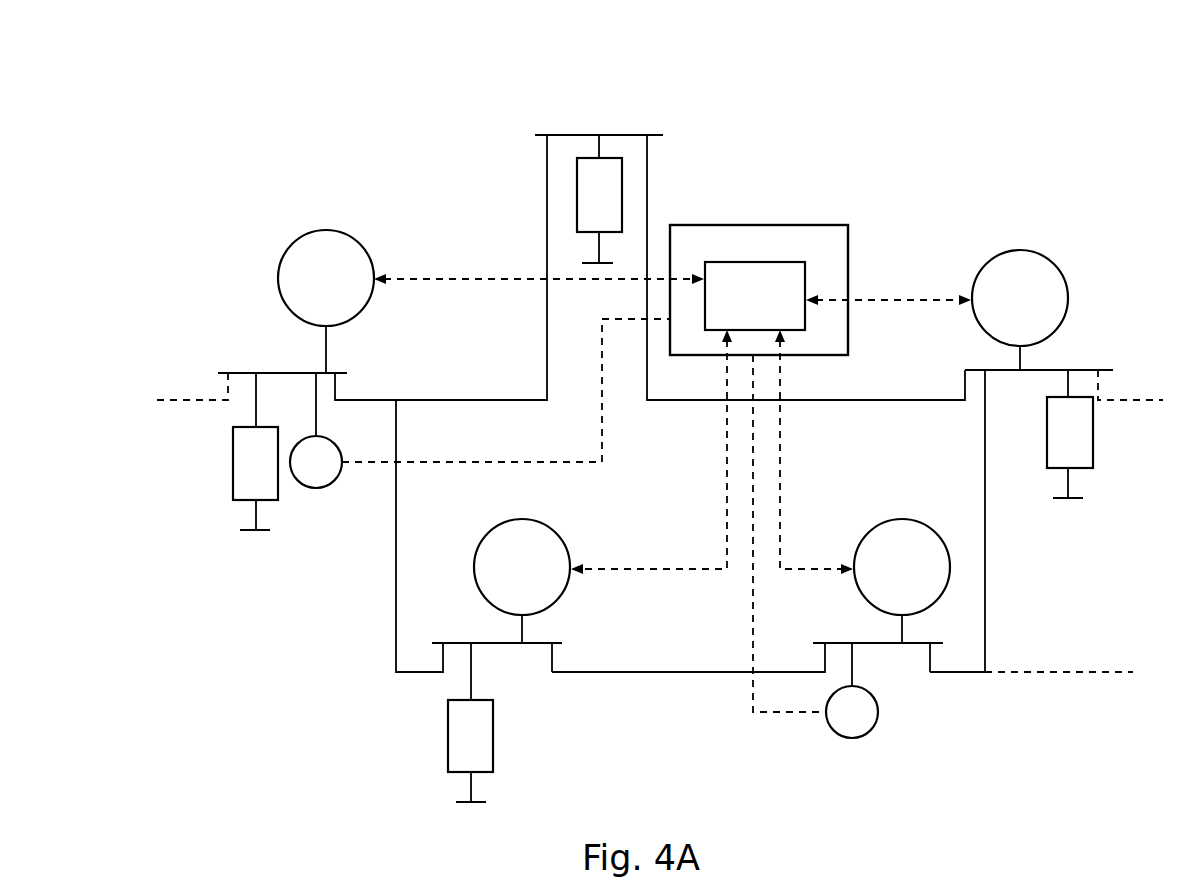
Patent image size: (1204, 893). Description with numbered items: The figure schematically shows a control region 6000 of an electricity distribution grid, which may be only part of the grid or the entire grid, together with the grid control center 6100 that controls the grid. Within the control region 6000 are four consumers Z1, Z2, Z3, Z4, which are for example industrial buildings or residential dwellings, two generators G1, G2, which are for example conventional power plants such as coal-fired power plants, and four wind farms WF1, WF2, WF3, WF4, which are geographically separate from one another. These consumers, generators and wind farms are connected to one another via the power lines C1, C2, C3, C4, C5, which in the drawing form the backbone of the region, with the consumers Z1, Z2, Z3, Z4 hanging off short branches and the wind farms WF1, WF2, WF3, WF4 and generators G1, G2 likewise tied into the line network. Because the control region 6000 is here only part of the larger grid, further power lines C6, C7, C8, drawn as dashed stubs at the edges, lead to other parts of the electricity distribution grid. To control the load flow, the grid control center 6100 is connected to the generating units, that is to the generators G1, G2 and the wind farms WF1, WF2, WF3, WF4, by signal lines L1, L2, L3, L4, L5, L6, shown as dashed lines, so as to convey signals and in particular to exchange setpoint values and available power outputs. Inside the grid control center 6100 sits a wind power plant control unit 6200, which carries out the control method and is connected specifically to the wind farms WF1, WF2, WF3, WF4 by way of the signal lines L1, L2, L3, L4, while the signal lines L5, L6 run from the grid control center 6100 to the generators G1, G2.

The control region 6000 is at (1038, 151).
The grid control center 6100 is at (815, 225).
The wind power plant control unit 6200 is at (786, 310).
The wind farm WF1 is at (326, 301).
The wind farm WF2 is at (522, 581).
The wind farm WF3 is at (902, 581).
The wind farm WF4 is at (1020, 310).
The consumer Z1 is at (255, 451).
The consumer Z2 is at (470, 722).
The consumer Z3 is at (599, 199).
The consumer Z4 is at (1070, 434).
The generator G1 is at (316, 430).
The generator G2 is at (852, 690).
The power line C1 is at (508, 398).
The power line C2 is at (647, 180).
The power line C3 is at (985, 552).
The power line C4 is at (652, 672).
The power line C5 is at (397, 492).
The power line C6 is at (1145, 400).
The power line C7 is at (1093, 673).
The power line C8 is at (175, 403).
The signal line L1 is at (522, 277).
The signal line L2 is at (708, 568).
The signal line L3 is at (780, 469).
The signal line L4 is at (907, 297).
The signal line L5 is at (578, 462).
The signal line L6 is at (800, 715).